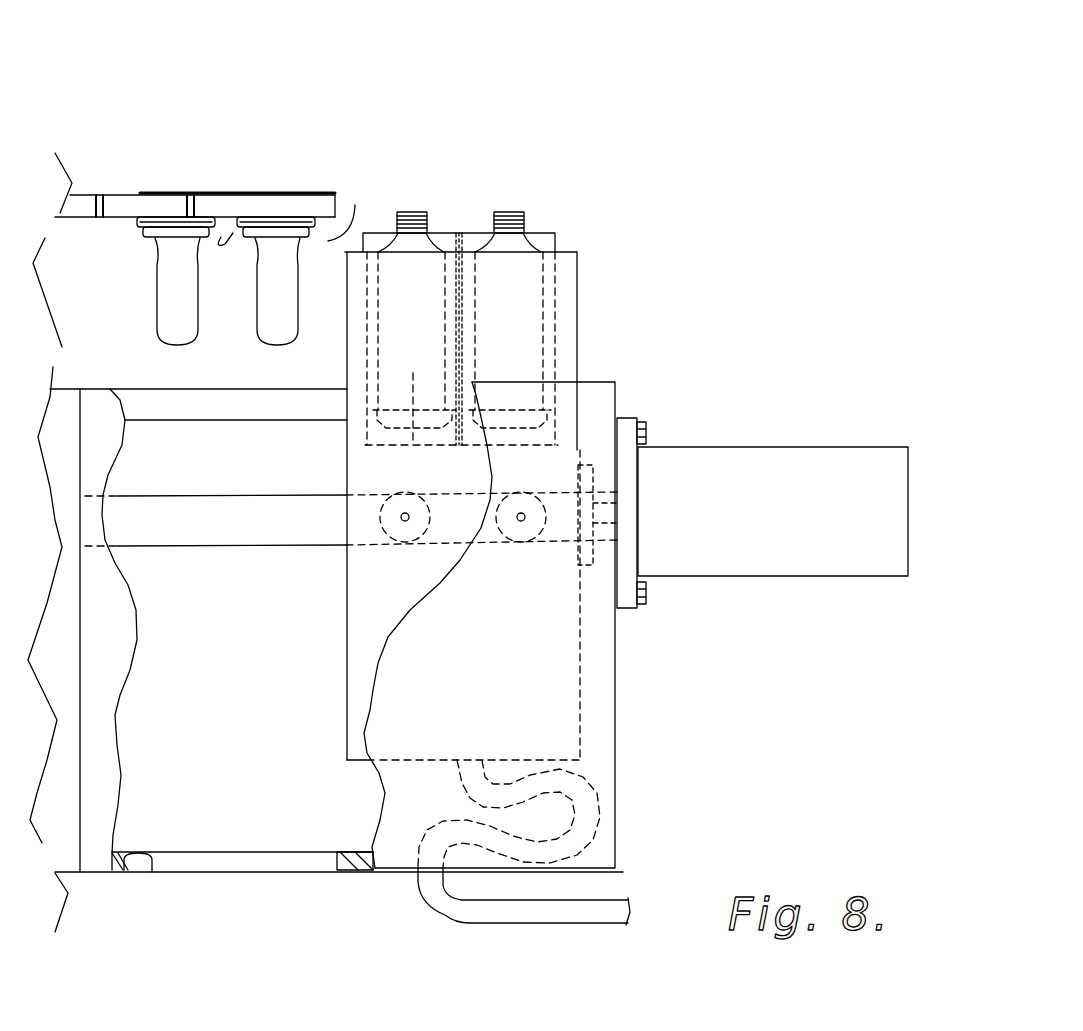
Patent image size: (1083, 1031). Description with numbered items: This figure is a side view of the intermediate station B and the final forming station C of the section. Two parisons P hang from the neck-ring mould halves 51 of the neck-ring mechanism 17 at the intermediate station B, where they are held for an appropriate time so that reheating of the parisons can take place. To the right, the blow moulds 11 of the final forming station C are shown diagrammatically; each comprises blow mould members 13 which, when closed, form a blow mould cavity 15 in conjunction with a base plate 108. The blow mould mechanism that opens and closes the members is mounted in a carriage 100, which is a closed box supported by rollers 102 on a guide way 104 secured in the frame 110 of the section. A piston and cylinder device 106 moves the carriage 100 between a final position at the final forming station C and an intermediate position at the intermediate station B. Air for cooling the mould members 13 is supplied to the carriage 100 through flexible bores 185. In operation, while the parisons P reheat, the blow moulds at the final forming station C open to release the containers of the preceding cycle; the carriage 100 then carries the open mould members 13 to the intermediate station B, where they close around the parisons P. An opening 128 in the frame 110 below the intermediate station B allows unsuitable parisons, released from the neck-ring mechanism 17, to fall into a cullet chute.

The blow mould 11 is at (499, 100).
The blow mould member 13 is at (448, 233).
The blow mould cavity 15 is at (400, 272).
The neck-ring mechanism 17 is at (118, 205).
The neck ring mould half 51 is at (221, 237).
The carriage 100 is at (354, 642).
The roller 102 is at (405, 527).
The guide way 104 is at (275, 513).
The piston and cylinder device 106 is at (822, 533).
The base plate 108 is at (378, 447).
The frame 110 is at (602, 747).
The opening 128 is at (152, 872).
The flexible bore 185 is at (430, 853).
The intermediate station B is at (204, 140).
The final forming station C is at (551, 114).
The parison P is at (180, 295).